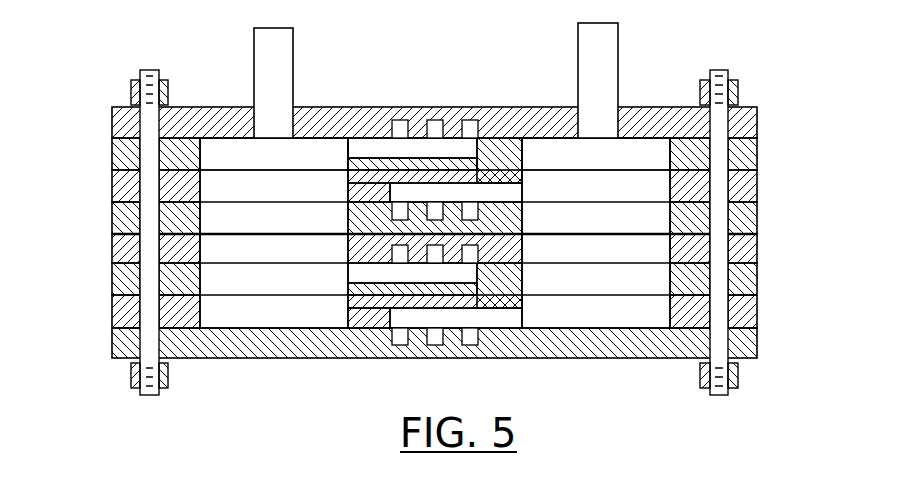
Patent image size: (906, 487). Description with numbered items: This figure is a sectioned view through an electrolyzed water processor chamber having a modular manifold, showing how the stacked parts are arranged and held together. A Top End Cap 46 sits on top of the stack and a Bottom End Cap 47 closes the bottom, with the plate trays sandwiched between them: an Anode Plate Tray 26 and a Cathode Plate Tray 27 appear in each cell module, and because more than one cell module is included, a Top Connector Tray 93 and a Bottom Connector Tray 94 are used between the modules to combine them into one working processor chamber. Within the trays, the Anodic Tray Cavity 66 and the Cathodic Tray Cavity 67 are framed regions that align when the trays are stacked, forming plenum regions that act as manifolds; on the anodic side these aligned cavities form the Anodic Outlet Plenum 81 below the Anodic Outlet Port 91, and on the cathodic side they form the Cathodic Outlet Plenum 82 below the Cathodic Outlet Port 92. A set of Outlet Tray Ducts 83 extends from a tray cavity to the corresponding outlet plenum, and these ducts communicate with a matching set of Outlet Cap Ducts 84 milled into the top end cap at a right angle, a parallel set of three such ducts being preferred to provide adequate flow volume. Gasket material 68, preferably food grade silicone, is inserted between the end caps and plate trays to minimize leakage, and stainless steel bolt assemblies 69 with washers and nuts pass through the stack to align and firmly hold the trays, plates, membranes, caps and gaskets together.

The Top End Cap 46 is at (117, 120).
The Bottom End Cap 47 is at (117, 348).
The Anode Plate Tray 26 is at (117, 152).
The Cathode Plate Tray 27 is at (117, 187).
The Top Connector Tray 93 is at (117, 218).
The Bottom Connector Tray 94 is at (117, 250).
The Anodic Tray Cavity 66 is at (245, 218).
The Cathodic Tray Cavity 67 is at (638, 220).
The Anodic Outlet Plenum 81 is at (308, 157).
The Cathodic Outlet Plenum 82 is at (573, 157).
The Outlet Tray Ducts 83 is at (452, 150).
The Outlet Cap Ducts 84 is at (398, 132).
The gasket material 68 is at (757, 200).
The bolt assemblies 69 is at (727, 87).
The Anodic Outlet Port 91 is at (600, 52).
The Cathodic Outlet Port 92 is at (282, 53).